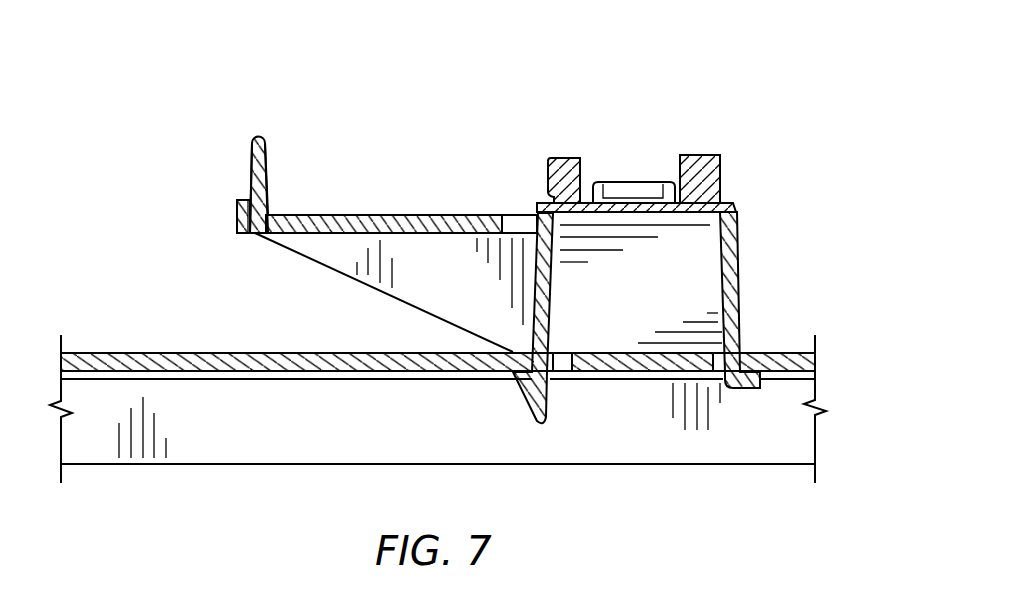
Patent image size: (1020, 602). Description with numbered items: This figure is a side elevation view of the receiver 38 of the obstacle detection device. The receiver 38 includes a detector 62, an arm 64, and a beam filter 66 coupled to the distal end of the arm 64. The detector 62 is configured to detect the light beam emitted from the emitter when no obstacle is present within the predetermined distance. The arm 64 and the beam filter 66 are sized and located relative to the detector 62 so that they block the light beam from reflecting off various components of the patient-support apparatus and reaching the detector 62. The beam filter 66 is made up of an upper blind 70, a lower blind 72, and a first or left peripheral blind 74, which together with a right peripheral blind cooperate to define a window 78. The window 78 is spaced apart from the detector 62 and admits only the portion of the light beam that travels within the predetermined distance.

The receiver 38 is at (771, 169).
The detector 62 is at (586, 160).
The arm 64 is at (447, 206).
The beam filter 66 is at (340, 153).
The upper blind 70 is at (243, 149).
The lower blind 72 is at (236, 215).
The first peripheral blind 74 is at (269, 187).
The window 78 is at (236, 187).